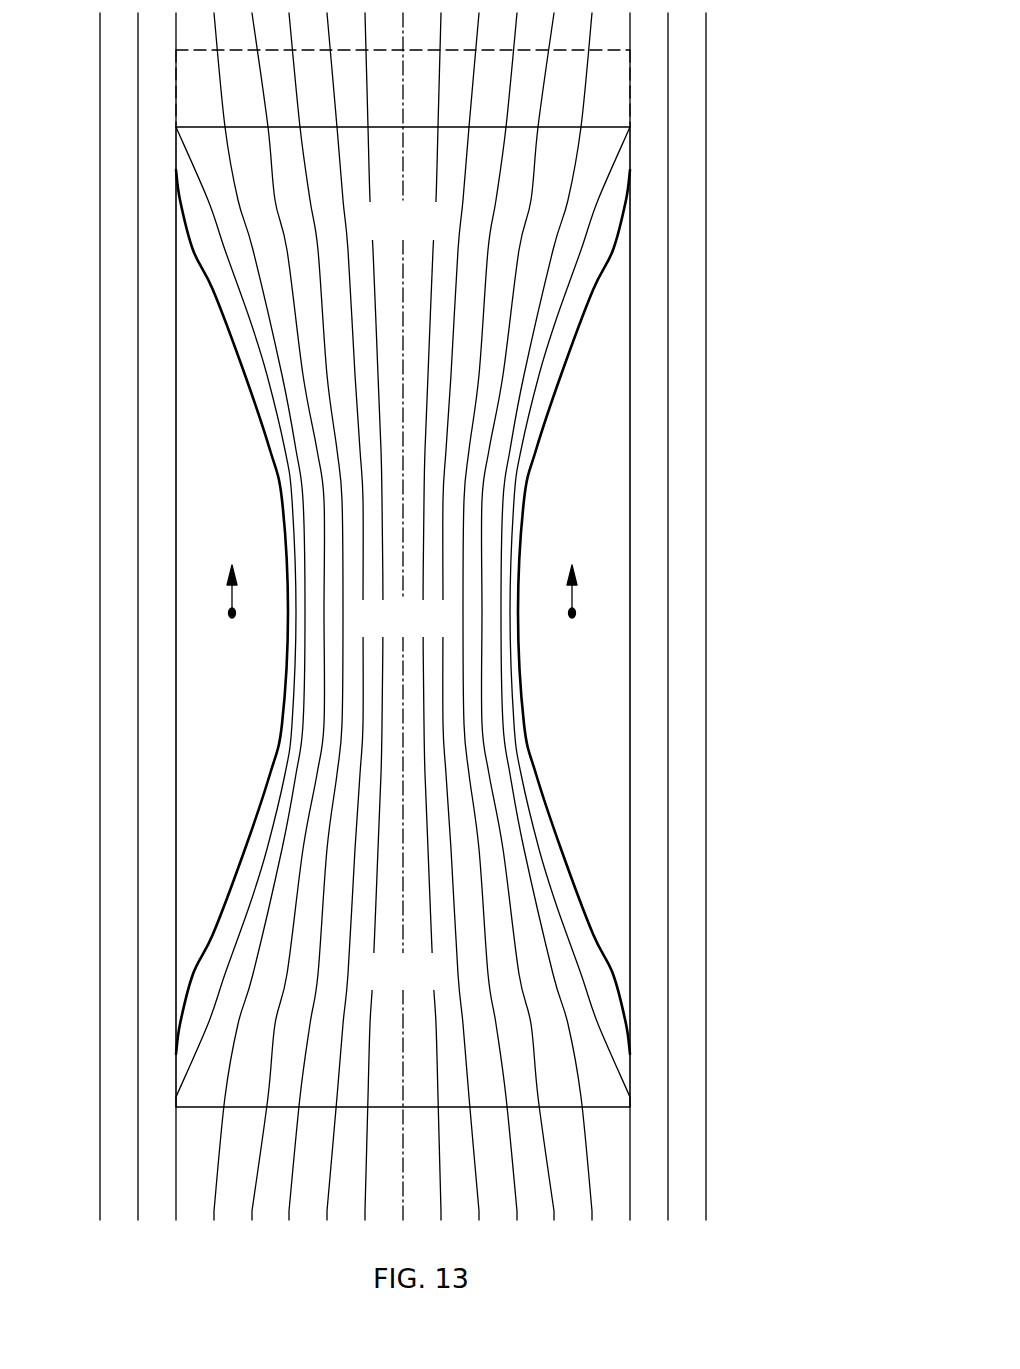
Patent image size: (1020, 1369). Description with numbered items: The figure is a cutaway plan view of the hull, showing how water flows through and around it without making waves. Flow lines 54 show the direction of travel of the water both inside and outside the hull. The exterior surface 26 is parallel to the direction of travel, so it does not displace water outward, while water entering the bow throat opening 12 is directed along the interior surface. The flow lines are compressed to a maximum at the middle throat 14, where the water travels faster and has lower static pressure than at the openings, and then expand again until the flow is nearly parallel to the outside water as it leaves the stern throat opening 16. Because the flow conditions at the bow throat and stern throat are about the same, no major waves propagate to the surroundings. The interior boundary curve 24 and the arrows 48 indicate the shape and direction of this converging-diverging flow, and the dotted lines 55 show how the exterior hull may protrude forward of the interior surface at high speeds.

The bow throat opening 12 is at (420, 232).
The middle throat 14 is at (420, 633).
The stern throat opening 16 is at (420, 986).
The boundary streamline 24 is at (568, 310).
The exterior surface 26 is at (629, 800).
The flow direction arrow 48 is at (574, 588).
The flow lines 54 is at (545, 73).
The dotted lines 55 is at (575, 50).